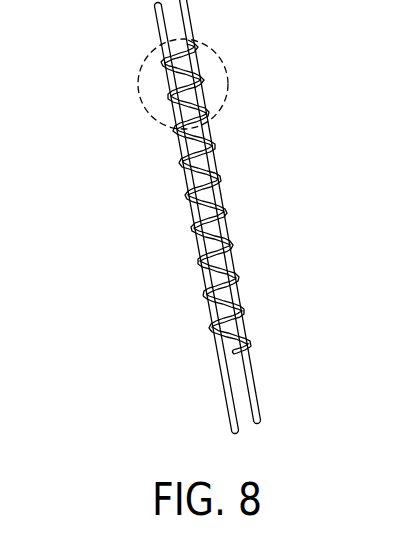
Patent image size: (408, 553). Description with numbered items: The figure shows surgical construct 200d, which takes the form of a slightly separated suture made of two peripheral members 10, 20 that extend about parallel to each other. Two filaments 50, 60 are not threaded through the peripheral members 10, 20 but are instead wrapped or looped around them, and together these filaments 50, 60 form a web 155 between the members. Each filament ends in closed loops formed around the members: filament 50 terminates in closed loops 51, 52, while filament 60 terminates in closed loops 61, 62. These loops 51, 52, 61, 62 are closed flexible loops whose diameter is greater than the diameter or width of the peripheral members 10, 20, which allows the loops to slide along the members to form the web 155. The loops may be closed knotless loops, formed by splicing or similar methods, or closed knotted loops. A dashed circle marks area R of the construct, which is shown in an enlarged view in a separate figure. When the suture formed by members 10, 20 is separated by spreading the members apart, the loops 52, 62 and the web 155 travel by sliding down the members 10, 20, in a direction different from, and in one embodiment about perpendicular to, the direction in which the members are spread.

The surgical construct 200d is at (135, 166).
The peripheral member 10 is at (186, 213).
The peripheral member 20 is at (229, 247).
The filament 50 is at (202, 321).
The closed loop 51 is at (222, 351).
The closed loop 52 is at (158, 62).
The filament 60 is at (244, 306).
The closed loop 61 is at (249, 345).
The closed loop 62 is at (207, 45).
The web 155 is at (206, 167).
The area R is at (228, 85).